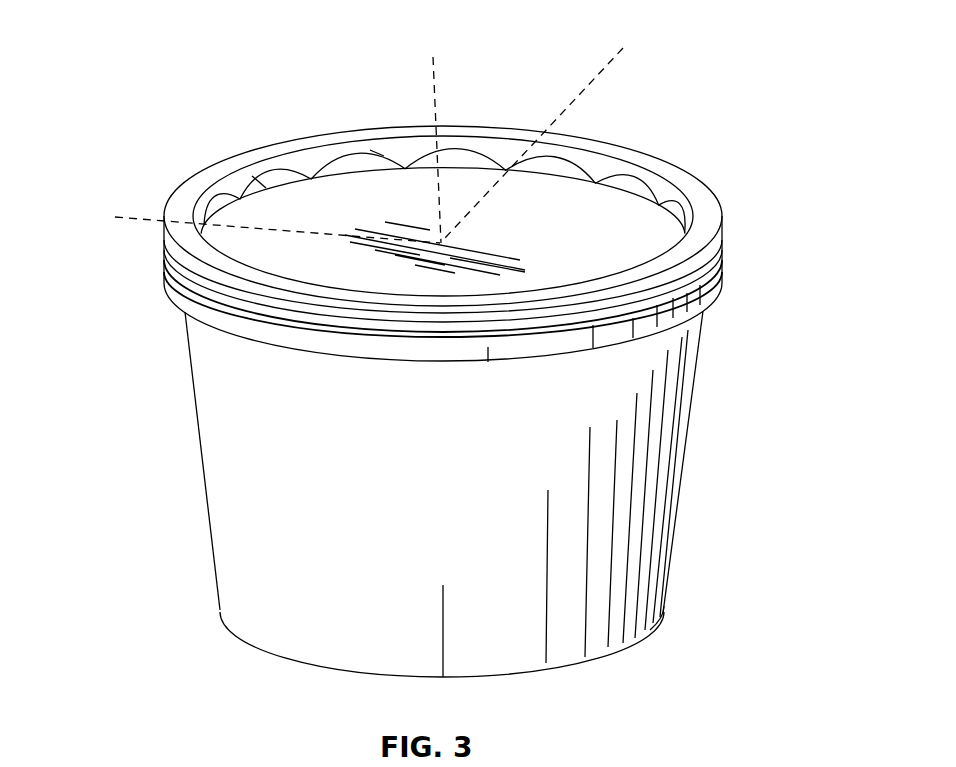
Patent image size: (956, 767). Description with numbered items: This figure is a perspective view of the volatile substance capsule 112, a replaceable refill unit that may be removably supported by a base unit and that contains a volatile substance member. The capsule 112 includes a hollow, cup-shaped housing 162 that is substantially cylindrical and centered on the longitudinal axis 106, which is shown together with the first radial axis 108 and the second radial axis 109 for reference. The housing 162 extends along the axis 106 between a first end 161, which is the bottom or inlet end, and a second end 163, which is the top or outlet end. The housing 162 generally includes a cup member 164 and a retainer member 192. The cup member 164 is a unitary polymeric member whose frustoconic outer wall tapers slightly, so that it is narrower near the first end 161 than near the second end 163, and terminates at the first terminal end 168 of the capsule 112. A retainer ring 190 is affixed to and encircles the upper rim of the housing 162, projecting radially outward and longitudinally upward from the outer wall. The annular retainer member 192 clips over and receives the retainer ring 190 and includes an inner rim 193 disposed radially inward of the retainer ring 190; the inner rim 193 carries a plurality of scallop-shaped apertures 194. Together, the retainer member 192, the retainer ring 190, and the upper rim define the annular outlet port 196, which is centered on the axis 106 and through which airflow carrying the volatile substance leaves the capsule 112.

The volatile substance capsule 112 is at (146, 70).
The longitudinal axis 106 is at (435, 77).
The first radial axis 108 is at (597, 75).
The second radial axis 109 is at (130, 233).
The retainer member 192 is at (303, 172).
The apertures 194 is at (377, 153).
The outlet port 196 is at (263, 186).
The inner rim 193 is at (630, 175).
The second end 163 is at (707, 193).
The retainer ring 190 is at (723, 275).
The housing 162 is at (689, 445).
The cup member 164 is at (234, 512).
The first end 161 is at (657, 620).
The first terminal end 168 is at (333, 668).